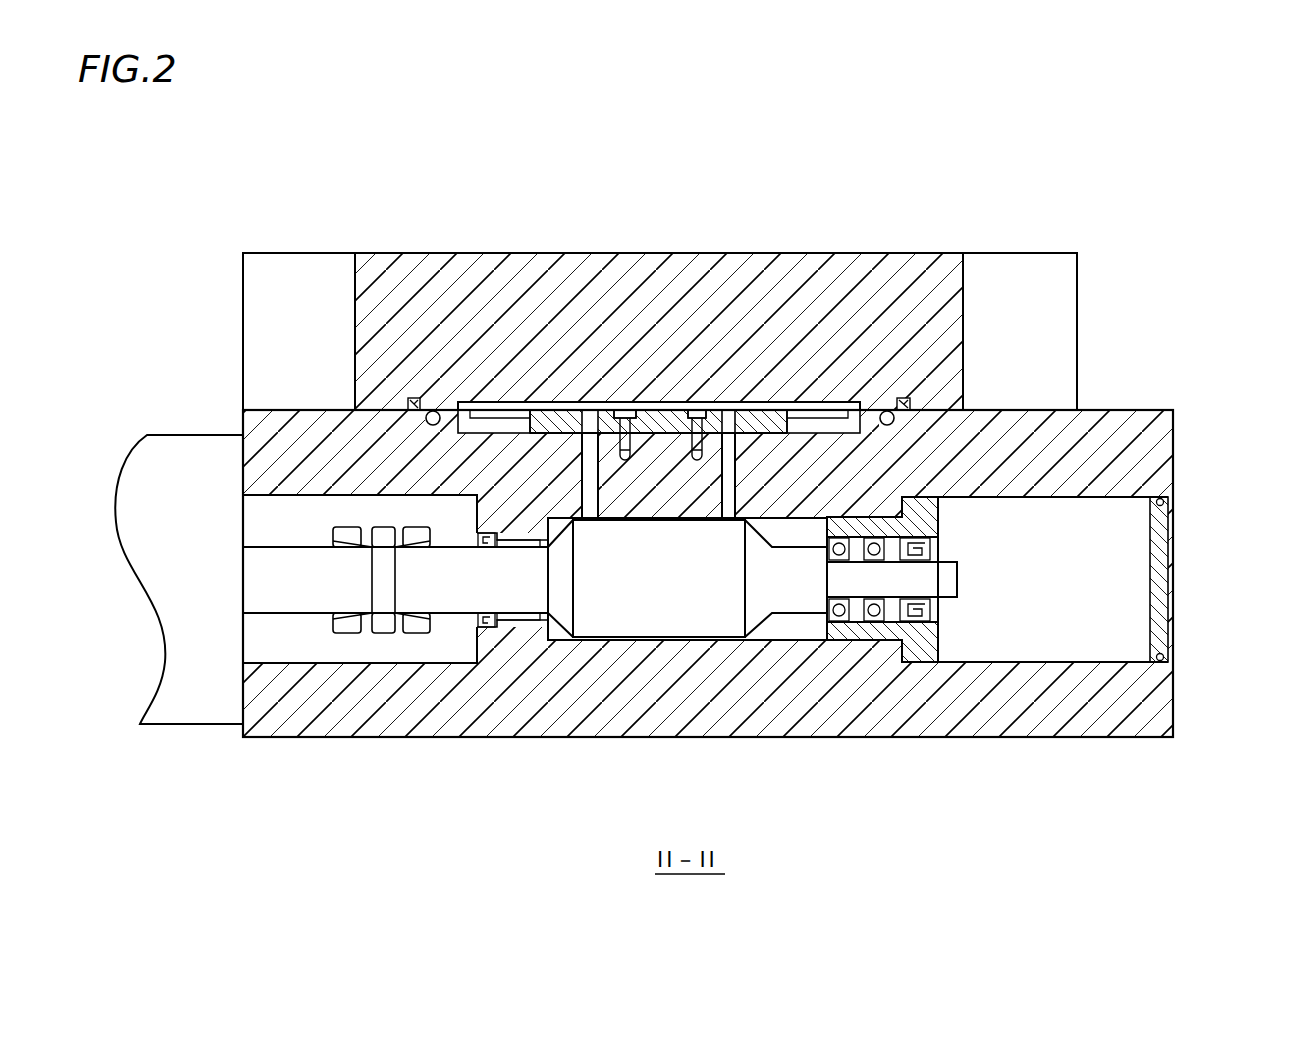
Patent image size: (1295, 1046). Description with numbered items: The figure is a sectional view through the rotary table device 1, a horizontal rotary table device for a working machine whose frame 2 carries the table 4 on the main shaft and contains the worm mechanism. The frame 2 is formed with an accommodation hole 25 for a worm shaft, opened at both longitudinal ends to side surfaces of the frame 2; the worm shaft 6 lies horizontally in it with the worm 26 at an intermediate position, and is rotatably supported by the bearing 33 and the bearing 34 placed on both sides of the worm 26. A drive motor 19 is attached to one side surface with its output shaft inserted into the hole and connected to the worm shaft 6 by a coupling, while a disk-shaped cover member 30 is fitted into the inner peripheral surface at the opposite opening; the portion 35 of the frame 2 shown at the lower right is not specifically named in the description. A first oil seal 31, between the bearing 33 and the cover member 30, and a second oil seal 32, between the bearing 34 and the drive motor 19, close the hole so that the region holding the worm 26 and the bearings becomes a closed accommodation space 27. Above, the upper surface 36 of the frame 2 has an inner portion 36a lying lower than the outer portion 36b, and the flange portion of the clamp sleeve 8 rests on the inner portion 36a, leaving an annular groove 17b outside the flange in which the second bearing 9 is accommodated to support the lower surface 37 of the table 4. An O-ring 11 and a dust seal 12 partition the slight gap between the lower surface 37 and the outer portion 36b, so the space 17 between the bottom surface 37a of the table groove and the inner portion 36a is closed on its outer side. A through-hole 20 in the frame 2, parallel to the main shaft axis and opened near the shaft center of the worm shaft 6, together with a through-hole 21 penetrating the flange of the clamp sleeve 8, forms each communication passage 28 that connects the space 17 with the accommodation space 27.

The rotary table device 1 is at (1116, 279).
The frame 2 is at (1173, 446).
The table 4 is at (1077, 351).
The worm shaft 6 is at (803, 621).
The clamp sleeve 8 is at (641, 410).
The second bearing 9 is at (580, 466).
The O-ring 11 is at (888, 410).
The dust seal 12 is at (906, 400).
The space 17 is at (790, 402).
The annular groove 17b is at (812, 410).
The drive motor 19 is at (172, 436).
The through-hole 20 is at (726, 426).
The through-hole 21 is at (742, 404).
The accommodation hole for a worm shaft 25 is at (780, 624).
The worm 26 is at (680, 600).
The accommodation space 27 is at (776, 671).
The communication passage 28 is at (658, 421).
The cover member 30 is at (1172, 516).
The first oil seal 31 is at (905, 608).
The second oil seal 32 is at (481, 626).
The bearing 33 is at (848, 616).
The bearing 34 is at (527, 628).
The housing portion 35 is at (1125, 738).
The upper surface of the frame 36 is at (330, 296).
The inner portion 36a is at (440, 410).
The outer portion 36b is at (412, 397).
The lower surface of the table 37 is at (948, 311).
The bottom surface of the groove 37a is at (842, 402).